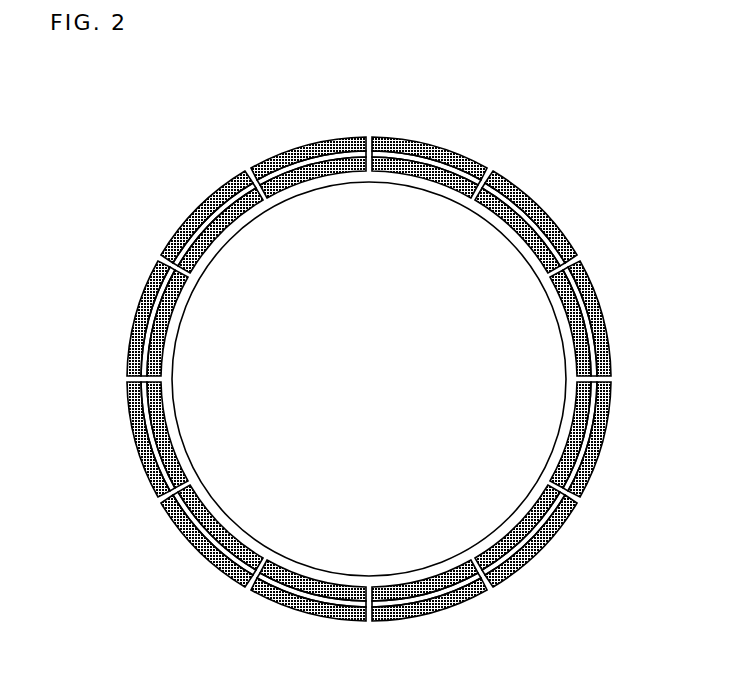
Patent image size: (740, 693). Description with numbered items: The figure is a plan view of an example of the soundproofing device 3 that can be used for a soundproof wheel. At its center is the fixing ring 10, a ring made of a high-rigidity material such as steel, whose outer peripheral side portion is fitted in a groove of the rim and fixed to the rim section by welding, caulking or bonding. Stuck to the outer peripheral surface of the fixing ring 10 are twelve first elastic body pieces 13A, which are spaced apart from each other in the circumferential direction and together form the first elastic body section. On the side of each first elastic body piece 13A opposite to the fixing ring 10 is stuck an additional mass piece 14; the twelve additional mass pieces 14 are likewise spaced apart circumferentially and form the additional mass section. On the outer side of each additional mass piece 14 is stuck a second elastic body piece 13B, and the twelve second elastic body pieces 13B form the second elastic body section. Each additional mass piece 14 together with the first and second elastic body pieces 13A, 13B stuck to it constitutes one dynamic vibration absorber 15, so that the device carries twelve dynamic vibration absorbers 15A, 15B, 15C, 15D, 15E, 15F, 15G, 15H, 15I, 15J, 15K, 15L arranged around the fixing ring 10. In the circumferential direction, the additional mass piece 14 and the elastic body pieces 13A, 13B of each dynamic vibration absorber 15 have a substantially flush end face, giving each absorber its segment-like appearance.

The soundproofing device 3 is at (563, 135).
The fixing ring 10 is at (320, 183).
The first elastic body piece 13A is at (453, 157).
The second elastic body piece 13B is at (395, 135).
The additional mass piece 14 is at (425, 148).
The dynamic vibration absorber 15 is at (441, 128).
The dynamic vibration absorber 15A is at (445, 145).
The dynamic vibration absorber 15B is at (553, 218).
The dynamic vibration absorber 15C is at (606, 322).
The dynamic vibration absorber 15D is at (606, 438).
The dynamic vibration absorber 15E is at (549, 535).
The dynamic vibration absorber 15F is at (427, 614).
The dynamic vibration absorber 15G is at (303, 614).
The dynamic vibration absorber 15H is at (182, 537).
The dynamic vibration absorber 15I is at (134, 437).
The dynamic vibration absorber 15J is at (134, 317).
The dynamic vibration absorber 15K is at (186, 218).
The dynamic vibration absorber 15L is at (311, 139).